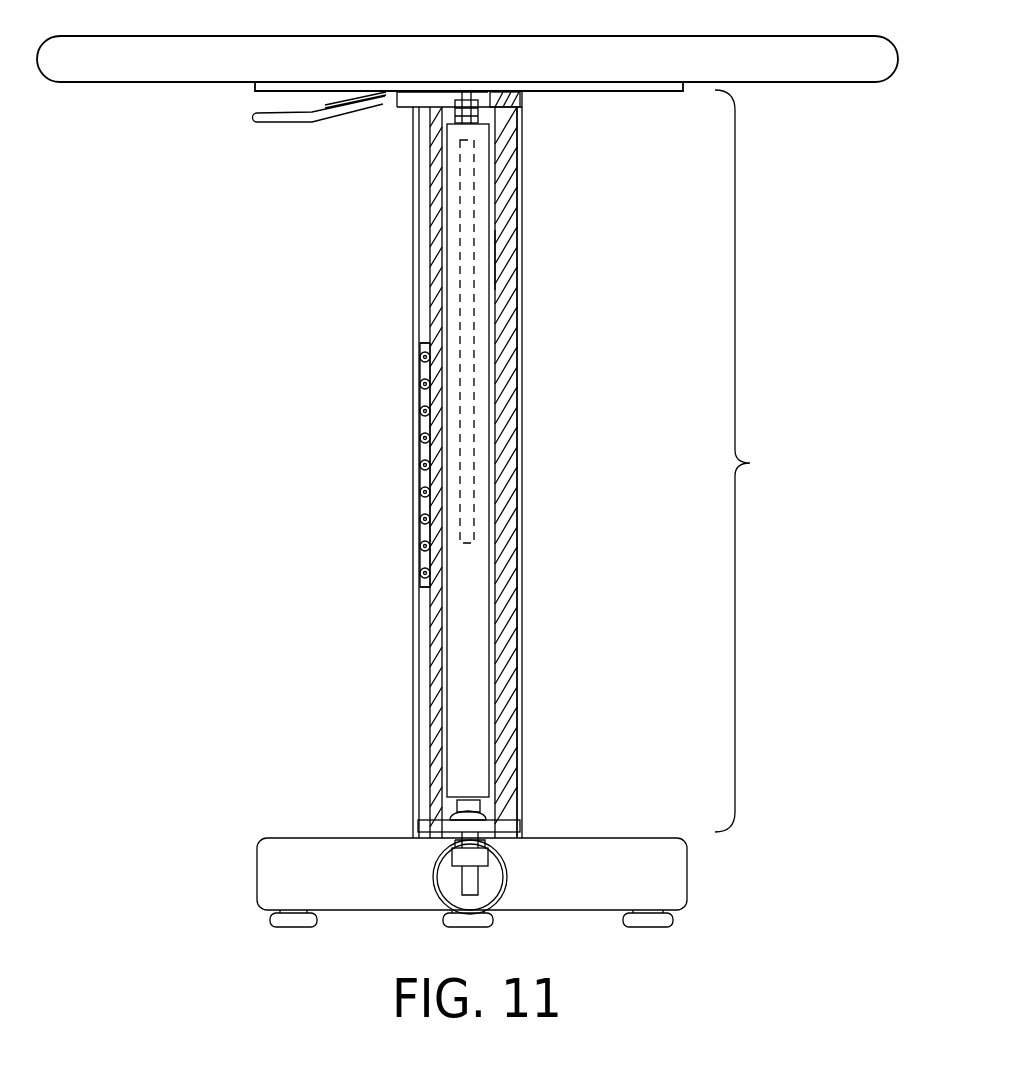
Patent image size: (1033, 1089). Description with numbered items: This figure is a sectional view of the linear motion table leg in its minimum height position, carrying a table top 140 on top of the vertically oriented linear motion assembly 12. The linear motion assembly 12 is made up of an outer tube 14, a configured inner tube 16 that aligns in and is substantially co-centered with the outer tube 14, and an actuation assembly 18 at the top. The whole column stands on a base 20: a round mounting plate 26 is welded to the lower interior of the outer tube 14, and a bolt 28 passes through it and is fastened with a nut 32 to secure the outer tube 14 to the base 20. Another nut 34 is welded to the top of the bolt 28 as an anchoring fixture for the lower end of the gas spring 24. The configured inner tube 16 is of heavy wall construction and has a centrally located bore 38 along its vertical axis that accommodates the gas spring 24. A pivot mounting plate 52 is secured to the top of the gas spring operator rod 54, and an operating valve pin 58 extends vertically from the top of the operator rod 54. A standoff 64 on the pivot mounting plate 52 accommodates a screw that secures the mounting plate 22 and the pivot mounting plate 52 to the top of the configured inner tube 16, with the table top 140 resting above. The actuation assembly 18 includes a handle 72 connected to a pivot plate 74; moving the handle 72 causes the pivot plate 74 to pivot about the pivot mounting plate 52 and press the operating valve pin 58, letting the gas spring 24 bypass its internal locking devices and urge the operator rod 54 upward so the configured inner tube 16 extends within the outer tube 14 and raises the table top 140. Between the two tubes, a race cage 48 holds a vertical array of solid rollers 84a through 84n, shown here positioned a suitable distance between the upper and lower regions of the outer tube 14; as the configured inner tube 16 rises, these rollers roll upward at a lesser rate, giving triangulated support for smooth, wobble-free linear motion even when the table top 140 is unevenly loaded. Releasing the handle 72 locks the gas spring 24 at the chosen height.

The linear motion assembly 12 is at (754, 461).
The outer tube 14 is at (530, 688).
The configured inner tube 16 is at (522, 365).
The actuation assembly 18 is at (305, 130).
The base 20 is at (635, 826).
The mounting plate 22 is at (615, 89).
The gas spring 24 is at (500, 608).
The round mounting plate 26 is at (508, 826).
The bolt 28 is at (466, 876).
The nut 32 is at (455, 857).
The nut 34 is at (456, 806).
The bore 38 is at (496, 259).
The race cage 48 is at (400, 368).
The pivot mounting plate 52 is at (394, 120).
The operator rod 54 is at (479, 495).
The operating valve pin 58 is at (470, 100).
The standoff 64 is at (516, 97).
The handle 72 is at (275, 120).
The pivot plate 74 is at (425, 91).
The solid roller 84a is at (421, 358).
The solid roller 84n is at (420, 574).
The table top 140 is at (166, 83).